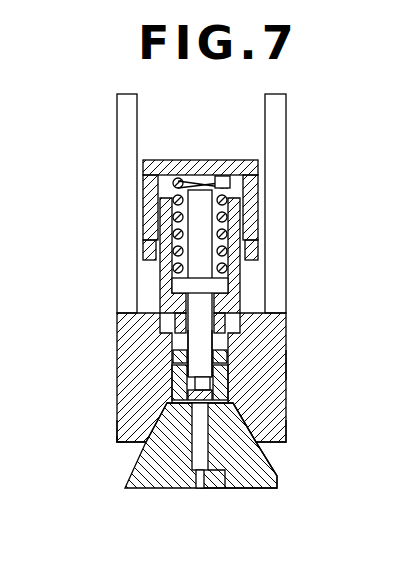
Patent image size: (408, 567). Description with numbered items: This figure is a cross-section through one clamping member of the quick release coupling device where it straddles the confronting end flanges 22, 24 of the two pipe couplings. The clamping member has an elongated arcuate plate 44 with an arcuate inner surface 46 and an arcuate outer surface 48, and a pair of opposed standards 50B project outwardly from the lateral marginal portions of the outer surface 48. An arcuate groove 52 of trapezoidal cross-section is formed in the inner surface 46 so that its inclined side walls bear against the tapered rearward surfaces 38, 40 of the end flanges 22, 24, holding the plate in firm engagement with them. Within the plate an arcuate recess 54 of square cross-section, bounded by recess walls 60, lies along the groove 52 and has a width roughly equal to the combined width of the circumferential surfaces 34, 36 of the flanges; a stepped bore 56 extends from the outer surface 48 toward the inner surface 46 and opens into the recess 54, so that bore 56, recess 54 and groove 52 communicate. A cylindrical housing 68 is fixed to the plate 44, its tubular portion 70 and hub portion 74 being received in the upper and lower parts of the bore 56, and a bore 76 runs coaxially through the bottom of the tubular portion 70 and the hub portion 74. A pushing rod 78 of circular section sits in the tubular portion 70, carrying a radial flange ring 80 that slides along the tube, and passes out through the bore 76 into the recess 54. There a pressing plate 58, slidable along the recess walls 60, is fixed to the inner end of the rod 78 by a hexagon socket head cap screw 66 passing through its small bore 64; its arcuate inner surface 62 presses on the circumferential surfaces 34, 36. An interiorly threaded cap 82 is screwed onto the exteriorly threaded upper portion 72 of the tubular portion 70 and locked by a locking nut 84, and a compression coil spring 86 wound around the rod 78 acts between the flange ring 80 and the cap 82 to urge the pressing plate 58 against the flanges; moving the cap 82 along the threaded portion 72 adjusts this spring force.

The standard 50B is at (117, 156).
The cap 82 is at (183, 160).
The compression coil spring 86 is at (225, 180).
The exteriorly threaded upper portion 72 is at (222, 200).
The locking nut 84 is at (178, 240).
The pushing rod 78 is at (197, 211).
The radial flange ring 80 is at (190, 265).
The tubular portion 70 is at (238, 250).
The cylindrical housing 68 is at (152, 300).
The outer surface 48 is at (262, 292).
The bore 76 is at (228, 325).
The bore 56 is at (180, 330).
The hub portion 74 is at (200, 345).
The arcuate plate 44 is at (128, 370).
The arcuate recess 54 is at (250, 362).
The recess walls 60 is at (190, 395).
The circumferential surface 34 is at (180, 415).
The pressing plate 58 is at (222, 385).
The circumferential surface 36 is at (218, 405).
The rearward surface 38 is at (117, 428).
The rearward surface 40 is at (268, 430).
The inner surface 46 is at (118, 443).
The arcuate groove 52 is at (258, 466).
The end flange 22 is at (160, 480).
The end flange 24 is at (245, 488).
The arcuate inner surface 62 is at (158, 490).
The small bore 64 is at (200, 490).
The hexagon socket head cap screw 66 is at (225, 488).